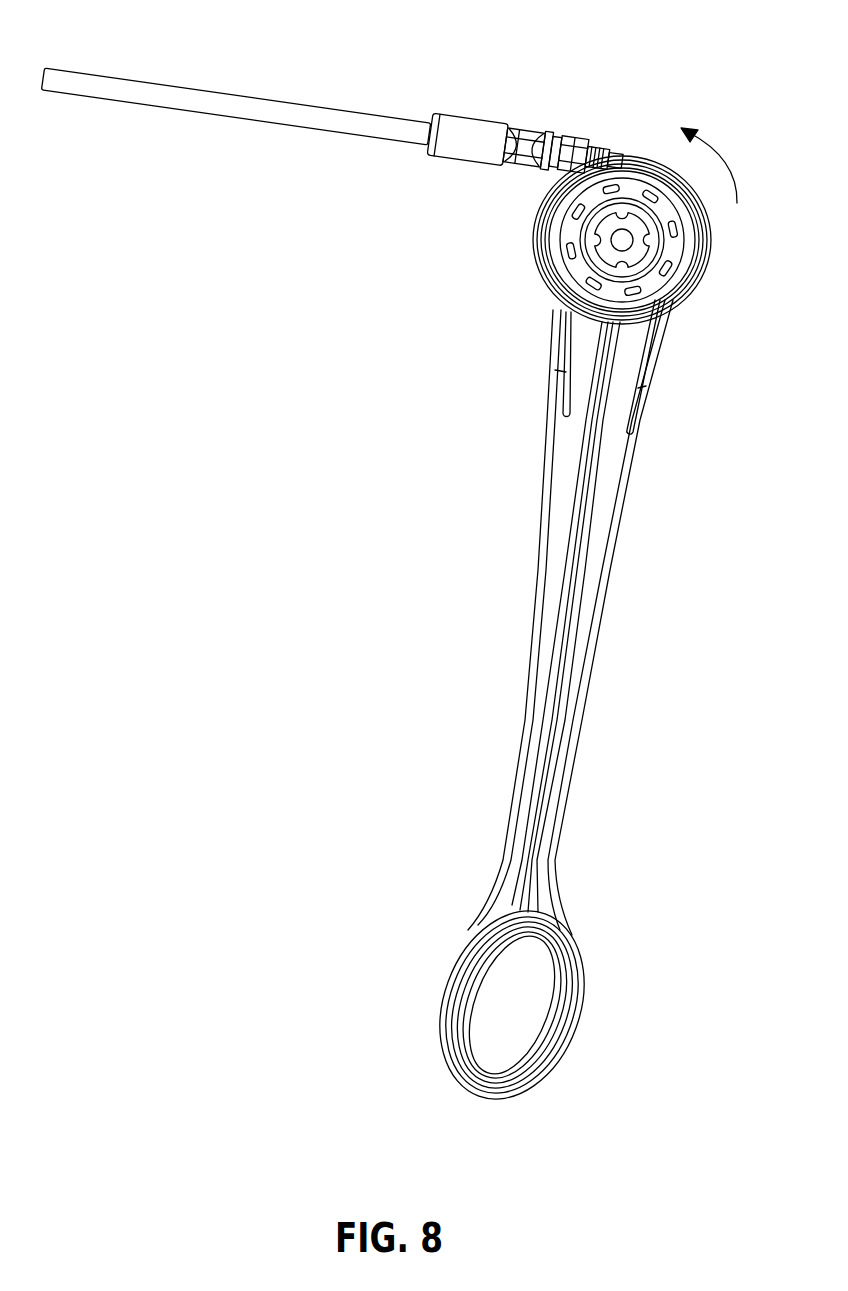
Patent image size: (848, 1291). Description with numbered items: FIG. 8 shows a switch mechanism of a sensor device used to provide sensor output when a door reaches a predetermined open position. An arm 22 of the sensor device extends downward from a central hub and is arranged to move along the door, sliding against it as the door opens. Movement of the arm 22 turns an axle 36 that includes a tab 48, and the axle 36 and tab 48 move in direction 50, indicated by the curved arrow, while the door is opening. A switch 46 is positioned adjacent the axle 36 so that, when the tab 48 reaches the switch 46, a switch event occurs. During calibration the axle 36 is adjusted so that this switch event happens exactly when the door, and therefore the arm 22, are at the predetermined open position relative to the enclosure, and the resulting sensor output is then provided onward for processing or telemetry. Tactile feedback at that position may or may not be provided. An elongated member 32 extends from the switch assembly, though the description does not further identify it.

The arm 22 is at (537, 598).
The rod 32 is at (272, 99).
The axle 36 is at (537, 247).
The switch 46 is at (605, 151).
The tab 48 is at (642, 153).
The direction 50 is at (727, 167).